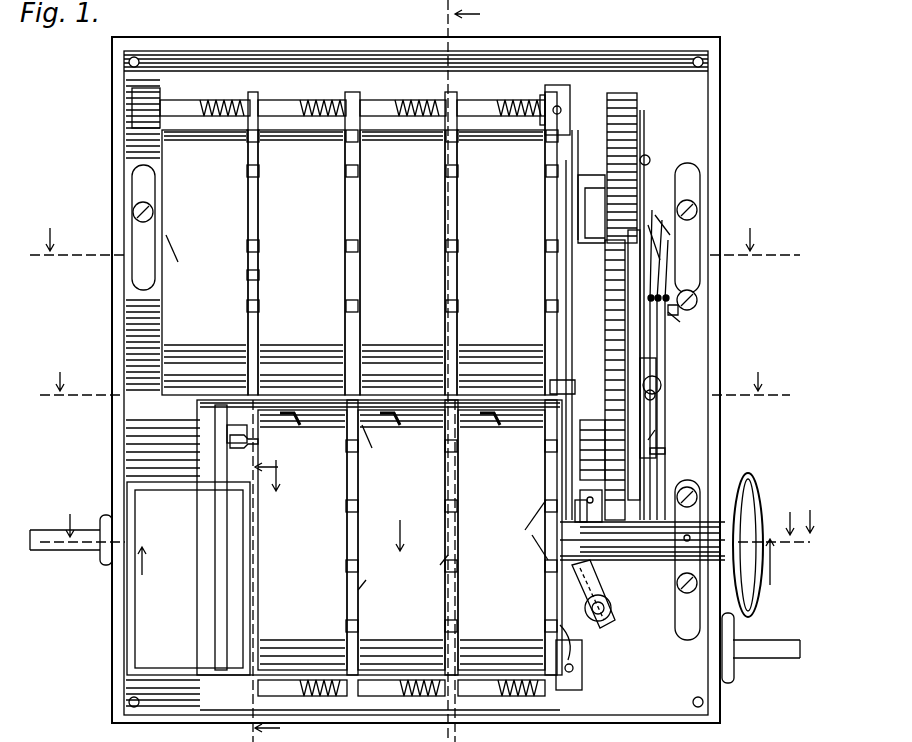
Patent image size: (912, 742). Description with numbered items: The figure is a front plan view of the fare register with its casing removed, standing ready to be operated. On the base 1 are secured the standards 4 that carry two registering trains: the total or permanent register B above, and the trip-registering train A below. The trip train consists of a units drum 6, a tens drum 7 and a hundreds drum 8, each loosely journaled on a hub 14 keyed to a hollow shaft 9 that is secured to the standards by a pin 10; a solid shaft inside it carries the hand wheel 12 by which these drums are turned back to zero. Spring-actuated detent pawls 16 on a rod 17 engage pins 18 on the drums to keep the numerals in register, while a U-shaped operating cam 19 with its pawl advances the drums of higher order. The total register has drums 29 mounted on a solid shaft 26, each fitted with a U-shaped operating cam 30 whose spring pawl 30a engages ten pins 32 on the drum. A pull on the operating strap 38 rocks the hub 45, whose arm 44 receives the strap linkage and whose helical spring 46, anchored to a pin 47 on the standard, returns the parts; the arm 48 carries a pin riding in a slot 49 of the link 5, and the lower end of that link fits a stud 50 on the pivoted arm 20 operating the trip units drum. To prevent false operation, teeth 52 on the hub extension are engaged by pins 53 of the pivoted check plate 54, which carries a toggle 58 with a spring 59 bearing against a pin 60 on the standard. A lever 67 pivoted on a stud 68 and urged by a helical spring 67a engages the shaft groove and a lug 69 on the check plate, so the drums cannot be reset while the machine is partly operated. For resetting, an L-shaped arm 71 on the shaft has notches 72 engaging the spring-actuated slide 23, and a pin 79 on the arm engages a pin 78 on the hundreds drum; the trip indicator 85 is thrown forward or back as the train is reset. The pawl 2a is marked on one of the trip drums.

The base 1 is at (125, 172).
The standards 4 is at (135, 270).
The link 5 is at (568, 366).
The units drum 6 is at (415, 423).
The tens drum 7 is at (413, 502).
The hundreds drum 8 is at (301, 472).
The hollow shaft 9 is at (438, 571).
The pin 10 is at (685, 582).
The hand wheel 12 is at (762, 480).
The hub 14 is at (413, 247).
The detent pawls 16 is at (588, 664).
The rod 17 is at (390, 700).
The pins 18 is at (373, 579).
The U-shaped operating cam 19 is at (436, 570).
The pivoted arm 20 is at (533, 562).
The pin 2a is at (530, 510).
The spring-actuated slide 23 is at (560, 386).
The solid shaft 26 is at (178, 263).
The drums 29 is at (260, 118).
The U-shaped operating cam 30 is at (347, 284).
The pawl 30a is at (256, 276).
The pins 32 is at (556, 128).
The operating strap 38 is at (60, 548).
The arm 44 is at (638, 112).
The hub 45 is at (692, 262).
The helical spring 46 is at (650, 215).
The pin 47 is at (692, 312).
The arm 48 is at (643, 248).
The slot 49 is at (596, 185).
The stud 50 is at (598, 512).
The teeth 52 is at (612, 425).
The pins 53 is at (602, 506).
The check plate 54 is at (634, 460).
The toggle 58 is at (650, 366).
The spring 59 is at (656, 432).
The pin 60 is at (668, 450).
The lever 67 is at (593, 594).
The helical spring 67a is at (580, 640).
The stud 68 is at (602, 614).
The lug 69 is at (592, 450).
The L-shaped arm 71 is at (480, 440).
The notches 72 is at (372, 437).
The pin 78 is at (258, 442).
The pin 79 is at (238, 426).
The trip indicator 85 is at (188, 578).
The trip-registering train A is at (345, 500).
The total register B is at (352, 262).